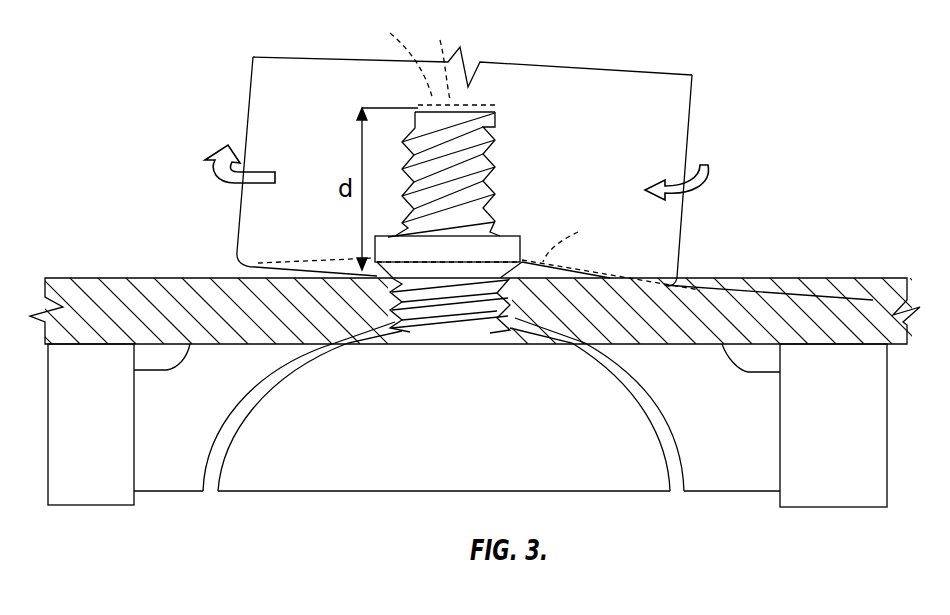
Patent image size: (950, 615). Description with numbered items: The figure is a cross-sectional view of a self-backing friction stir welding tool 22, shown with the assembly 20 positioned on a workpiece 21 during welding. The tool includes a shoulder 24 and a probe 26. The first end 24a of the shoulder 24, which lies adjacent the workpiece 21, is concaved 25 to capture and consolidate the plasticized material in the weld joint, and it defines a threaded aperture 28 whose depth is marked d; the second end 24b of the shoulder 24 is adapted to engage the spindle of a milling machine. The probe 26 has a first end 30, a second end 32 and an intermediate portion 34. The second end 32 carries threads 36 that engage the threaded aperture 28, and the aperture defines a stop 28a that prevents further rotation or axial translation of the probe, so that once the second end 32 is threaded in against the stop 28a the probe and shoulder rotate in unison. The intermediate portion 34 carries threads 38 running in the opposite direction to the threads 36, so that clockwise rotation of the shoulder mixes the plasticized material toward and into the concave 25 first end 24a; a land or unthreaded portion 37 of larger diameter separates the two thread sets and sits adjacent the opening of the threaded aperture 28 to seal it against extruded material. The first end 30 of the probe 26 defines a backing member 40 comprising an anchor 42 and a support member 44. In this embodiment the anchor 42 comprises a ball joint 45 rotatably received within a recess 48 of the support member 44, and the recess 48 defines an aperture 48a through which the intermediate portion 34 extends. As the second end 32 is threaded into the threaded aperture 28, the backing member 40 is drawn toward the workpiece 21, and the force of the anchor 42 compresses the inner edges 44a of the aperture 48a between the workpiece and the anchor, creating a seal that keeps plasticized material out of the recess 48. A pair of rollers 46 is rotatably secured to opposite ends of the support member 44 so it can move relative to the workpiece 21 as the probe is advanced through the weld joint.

The fastening assembly 20 is at (175, 166).
The workpiece 21 is at (87, 290).
The self-backing friction stir welding tool 22 is at (474, 370).
The shoulder 24 is at (519, 166).
The first end of the shoulder 24a is at (252, 270).
The second end of the shoulder 24b is at (660, 73).
The concave 25 is at (571, 237).
The probe 26 is at (463, 110).
The threaded aperture 28 is at (397, 62).
The stop 28a is at (457, 58).
The first end of the probe 30 is at (436, 341).
The second end of the probe 32 is at (487, 174).
The intermediate portion of the probe 34 is at (392, 300).
The threads of the second end 36 is at (490, 168).
The unthreaded portion 37 is at (510, 240).
The threads of the intermediate portion 38 is at (497, 307).
The backing member 40 is at (615, 462).
The anchor 42 is at (272, 490).
The support member 44 is at (743, 465).
The inner edges of the aperture 44a is at (470, 448).
The ball joint 45 is at (460, 433).
The rollers 46 is at (98, 477).
The recess 48 is at (623, 448).
The aperture of the recess 48a is at (331, 345).